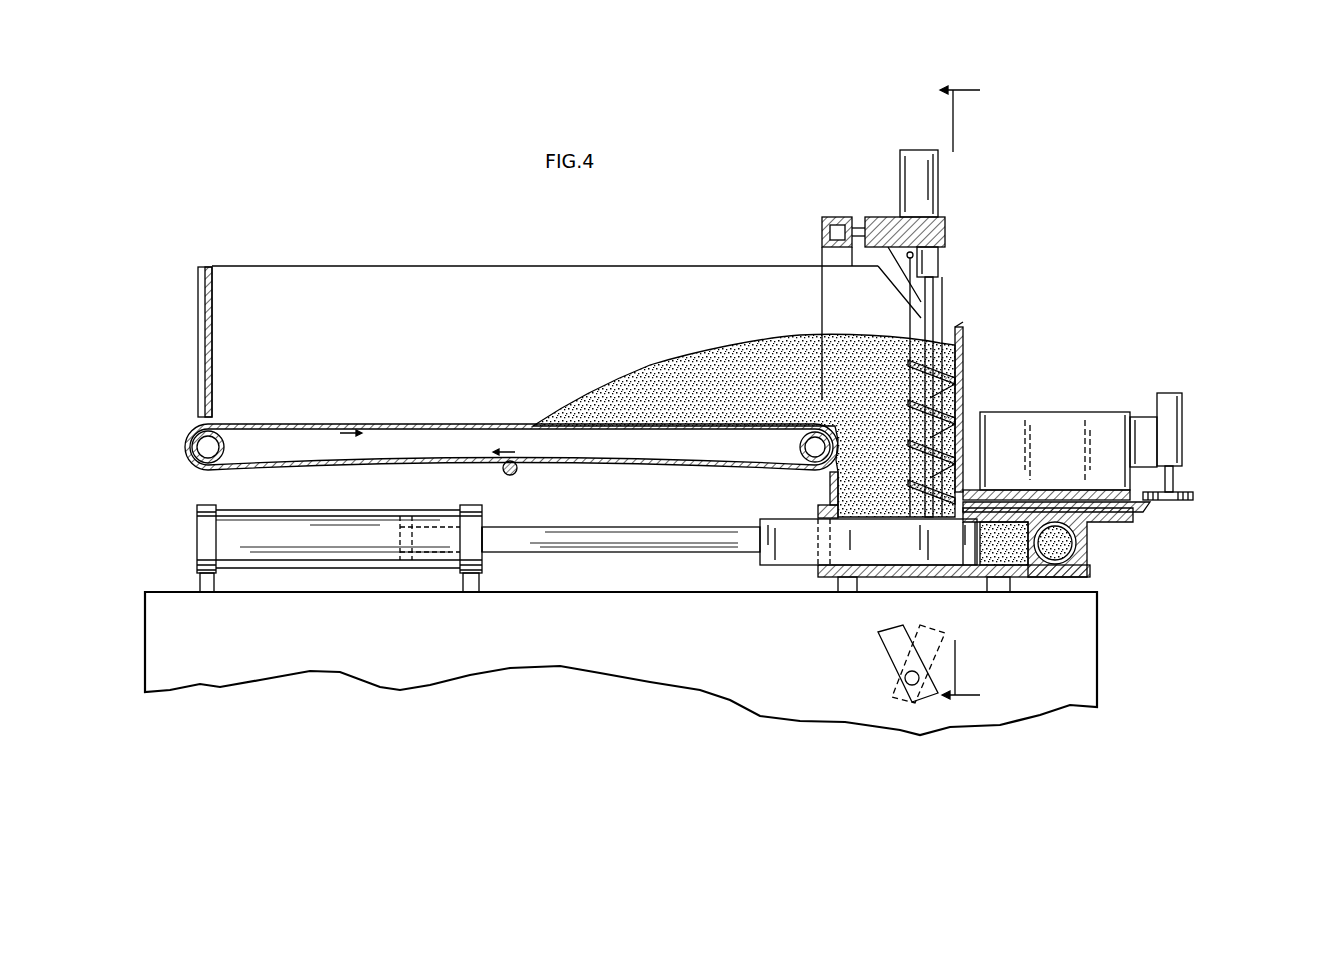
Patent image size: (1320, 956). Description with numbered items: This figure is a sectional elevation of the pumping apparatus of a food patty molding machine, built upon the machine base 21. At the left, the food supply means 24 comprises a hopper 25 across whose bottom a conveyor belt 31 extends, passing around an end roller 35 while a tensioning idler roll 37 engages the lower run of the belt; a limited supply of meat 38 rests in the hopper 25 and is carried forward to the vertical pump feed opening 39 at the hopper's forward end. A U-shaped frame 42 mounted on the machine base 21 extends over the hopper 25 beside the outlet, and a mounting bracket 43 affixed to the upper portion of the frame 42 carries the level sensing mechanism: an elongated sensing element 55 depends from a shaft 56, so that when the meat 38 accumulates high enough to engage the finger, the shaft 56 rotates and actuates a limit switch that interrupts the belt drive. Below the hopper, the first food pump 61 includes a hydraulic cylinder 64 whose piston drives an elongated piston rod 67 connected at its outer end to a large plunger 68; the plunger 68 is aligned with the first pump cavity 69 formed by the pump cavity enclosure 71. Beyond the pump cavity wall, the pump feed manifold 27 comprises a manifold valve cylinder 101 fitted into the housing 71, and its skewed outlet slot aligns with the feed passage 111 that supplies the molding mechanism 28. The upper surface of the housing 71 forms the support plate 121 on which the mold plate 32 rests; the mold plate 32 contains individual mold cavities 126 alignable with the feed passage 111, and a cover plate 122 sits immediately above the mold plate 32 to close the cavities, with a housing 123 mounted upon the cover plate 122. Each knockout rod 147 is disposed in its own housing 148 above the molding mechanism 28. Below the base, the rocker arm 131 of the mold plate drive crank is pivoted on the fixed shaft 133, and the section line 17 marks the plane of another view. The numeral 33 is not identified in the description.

The section line 17- 17 is at (976, 392).
The machine base 21 is at (152, 665).
The food supply means 24 is at (858, 195).
The hopper 25 is at (396, 288).
The pump feed manifold 27 is at (1100, 578).
The molding mechanism 28 is at (1045, 405).
The conveyor belt 31 is at (312, 470).
The mold plate 32 is at (1104, 505).
The flange / foot 33 is at (1190, 492).
The end roller 35 is at (205, 448).
The tensioning idler roll 37 is at (517, 470).
The meat 38 is at (748, 413).
The pump feed opening 39 is at (885, 428).
The U-shaped frame 42 is at (822, 230).
The mounting bracket 43 is at (962, 228).
The sensing element 55 is at (905, 310).
The shaft 56 is at (908, 258).
The first food pump 61 is at (484, 532).
The hydraulic cylinder 64 is at (282, 512).
The piston rod 67 is at (630, 532).
The plunger 68 is at (762, 542).
The first pump cavity 69 is at (990, 558).
The pump cavity enclosure 71 is at (1030, 580).
The manifold valve cylinder 101 is at (1068, 517).
The feed passage 111 is at (1085, 518).
The support plate 121 is at (1130, 515).
The cover plate 122 is at (1005, 520).
The housing 123 is at (1120, 412).
The mold cavity 126 is at (1070, 520).
The rocker arm 131 is at (875, 664).
The fixed shaft 133 is at (905, 678).
The knockout rod 147 is at (1178, 478).
The housing 148 is at (1190, 418).